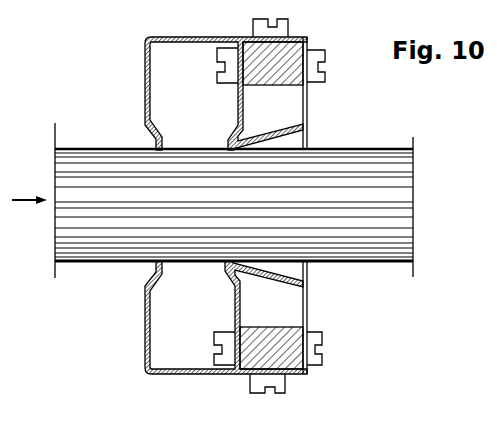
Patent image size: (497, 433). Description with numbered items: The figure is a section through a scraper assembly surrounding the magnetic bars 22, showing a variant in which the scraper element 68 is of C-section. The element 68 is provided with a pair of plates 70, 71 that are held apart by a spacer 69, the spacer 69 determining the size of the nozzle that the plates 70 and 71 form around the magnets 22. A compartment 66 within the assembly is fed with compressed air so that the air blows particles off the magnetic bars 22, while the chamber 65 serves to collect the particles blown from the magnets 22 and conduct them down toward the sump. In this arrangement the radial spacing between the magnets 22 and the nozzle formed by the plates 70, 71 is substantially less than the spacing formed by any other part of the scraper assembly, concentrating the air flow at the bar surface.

The magnetic bar 22 is at (100, 163).
The chamber 65 is at (205, 113).
The compartment 66 is at (279, 118).
The element 68 is at (145, 53).
The spacer 69 is at (252, 355).
The plate 70 is at (243, 300).
The plate 71 is at (303, 309).